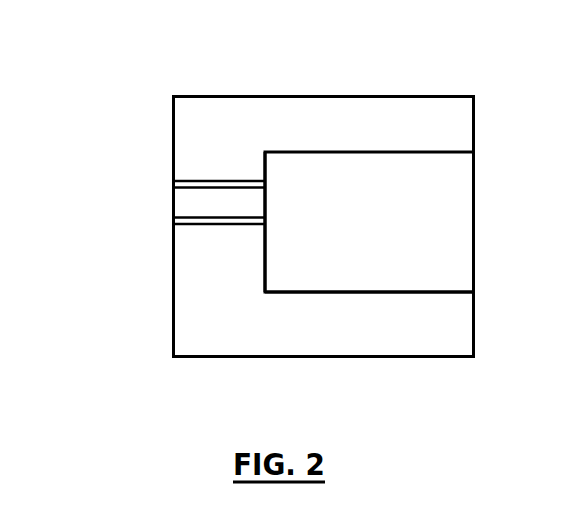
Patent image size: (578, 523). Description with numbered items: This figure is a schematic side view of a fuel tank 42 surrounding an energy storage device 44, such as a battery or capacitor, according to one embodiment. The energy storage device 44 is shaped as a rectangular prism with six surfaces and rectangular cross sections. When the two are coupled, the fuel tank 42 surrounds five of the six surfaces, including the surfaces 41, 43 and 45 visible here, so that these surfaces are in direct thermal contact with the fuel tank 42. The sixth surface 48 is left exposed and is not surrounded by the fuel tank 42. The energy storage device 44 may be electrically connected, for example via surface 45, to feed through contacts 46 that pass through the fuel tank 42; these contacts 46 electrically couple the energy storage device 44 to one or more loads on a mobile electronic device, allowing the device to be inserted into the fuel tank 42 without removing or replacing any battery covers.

The surface 41 is at (343, 146).
The fuel tank 42 is at (173, 122).
The surface 43 is at (364, 298).
The energy storage device 44 is at (476, 180).
The surface 45 is at (256, 273).
The feed through contacts 46 is at (194, 215).
The sixth surface 48 is at (482, 230).